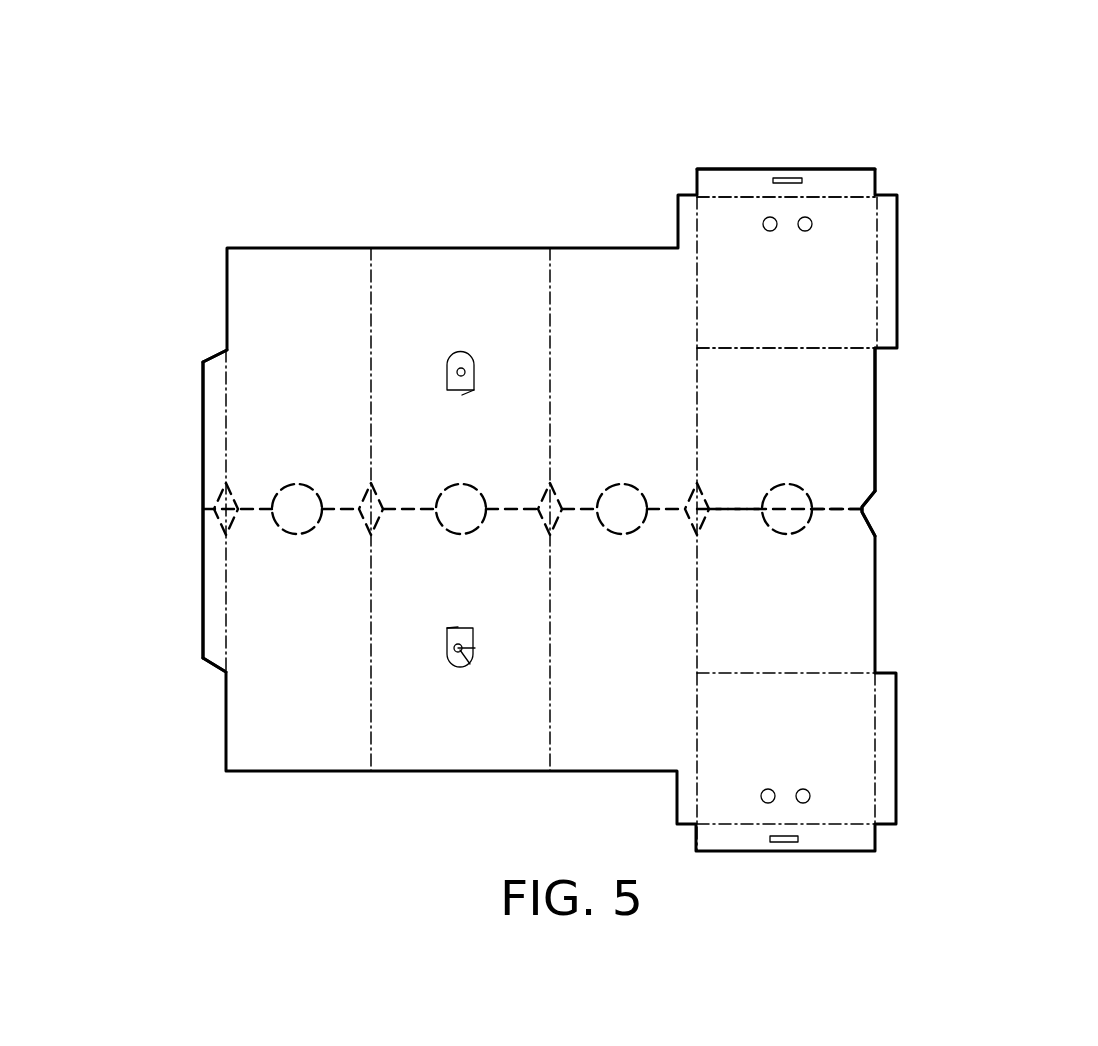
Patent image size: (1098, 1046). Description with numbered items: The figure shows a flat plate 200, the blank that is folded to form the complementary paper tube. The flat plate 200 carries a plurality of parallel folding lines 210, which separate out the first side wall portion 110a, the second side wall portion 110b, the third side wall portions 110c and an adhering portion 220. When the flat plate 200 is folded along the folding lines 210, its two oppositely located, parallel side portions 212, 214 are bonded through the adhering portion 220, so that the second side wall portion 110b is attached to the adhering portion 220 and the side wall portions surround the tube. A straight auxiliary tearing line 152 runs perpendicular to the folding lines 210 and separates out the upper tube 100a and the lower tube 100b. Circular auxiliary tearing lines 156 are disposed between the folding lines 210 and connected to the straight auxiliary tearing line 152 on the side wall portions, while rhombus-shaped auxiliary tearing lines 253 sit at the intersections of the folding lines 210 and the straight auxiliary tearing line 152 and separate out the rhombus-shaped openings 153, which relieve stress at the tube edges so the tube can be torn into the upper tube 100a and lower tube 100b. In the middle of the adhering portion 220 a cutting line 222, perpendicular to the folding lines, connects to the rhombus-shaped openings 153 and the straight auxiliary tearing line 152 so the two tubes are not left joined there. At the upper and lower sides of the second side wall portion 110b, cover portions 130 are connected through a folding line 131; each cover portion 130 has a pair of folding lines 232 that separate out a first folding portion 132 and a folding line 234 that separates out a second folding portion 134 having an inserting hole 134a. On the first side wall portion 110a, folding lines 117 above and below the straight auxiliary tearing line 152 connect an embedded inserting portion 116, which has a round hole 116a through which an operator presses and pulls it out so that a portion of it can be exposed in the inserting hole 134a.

The flat plate 200 is at (798, 38).
The cover portion 130 is at (857, 180).
The second folding portion 134 is at (740, 177).
The inserting hole 134a is at (788, 182).
The folding line 234 is at (833, 193).
The folding lines 232 is at (700, 268).
The folding line 131 is at (790, 343).
The first folding portion 132 is at (885, 230).
The upper tube 100a is at (935, 430).
The lower tube 100b is at (932, 653).
The side portion 214 is at (878, 380).
The second side wall portion 110b is at (848, 463).
The straight auxiliary tearing line 152 is at (840, 513).
The circular auxiliary tearing lines 156 is at (787, 534).
The first side wall portion 110a is at (492, 273).
The third side wall portions 110c is at (287, 263).
The folding lines 210 is at (368, 635).
The inserting portion 116 is at (460, 352).
The round hole 116a is at (447, 377).
The folding line 117 is at (466, 408).
The side portion 212 is at (213, 292).
The adhering portion 220 is at (217, 425).
The cutting line 222 is at (206, 497).
The rhombus-shaped openings 153 is at (232, 504).
The rhombus-shaped auxiliary tearing lines 253 is at (357, 522).